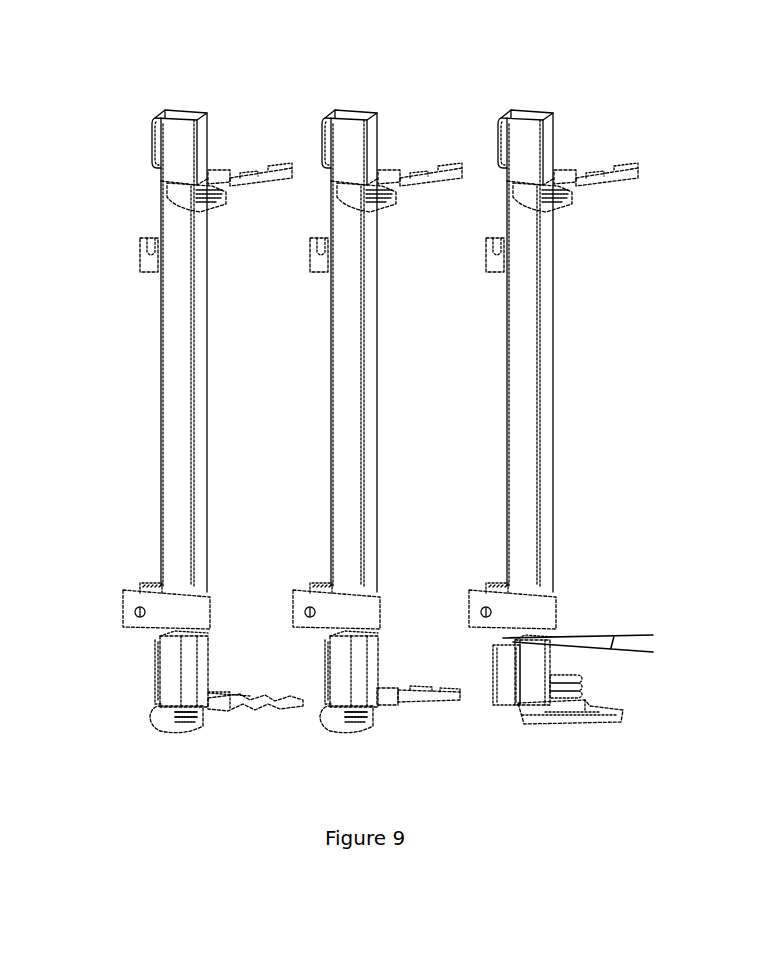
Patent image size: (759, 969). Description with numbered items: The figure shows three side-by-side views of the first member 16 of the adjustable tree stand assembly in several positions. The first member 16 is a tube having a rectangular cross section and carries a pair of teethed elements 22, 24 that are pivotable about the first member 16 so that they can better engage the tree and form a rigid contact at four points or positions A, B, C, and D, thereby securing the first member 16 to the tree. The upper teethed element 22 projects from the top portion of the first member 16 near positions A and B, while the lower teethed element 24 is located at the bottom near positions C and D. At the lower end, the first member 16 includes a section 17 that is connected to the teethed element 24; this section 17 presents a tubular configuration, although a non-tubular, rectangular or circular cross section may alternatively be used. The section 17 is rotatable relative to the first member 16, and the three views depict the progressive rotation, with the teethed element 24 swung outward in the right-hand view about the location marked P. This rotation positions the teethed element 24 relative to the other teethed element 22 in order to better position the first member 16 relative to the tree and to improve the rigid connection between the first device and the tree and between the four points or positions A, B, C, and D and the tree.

The first member 16 is at (172, 376).
The section 17 is at (180, 667).
The teethed element 22 is at (229, 178).
The teethed element 24 is at (192, 717).
The contact point A is at (192, 195).
The contact point B is at (237, 180).
The contact point C is at (233, 703).
The contact point D is at (170, 718).
The pivot point P is at (207, 634).